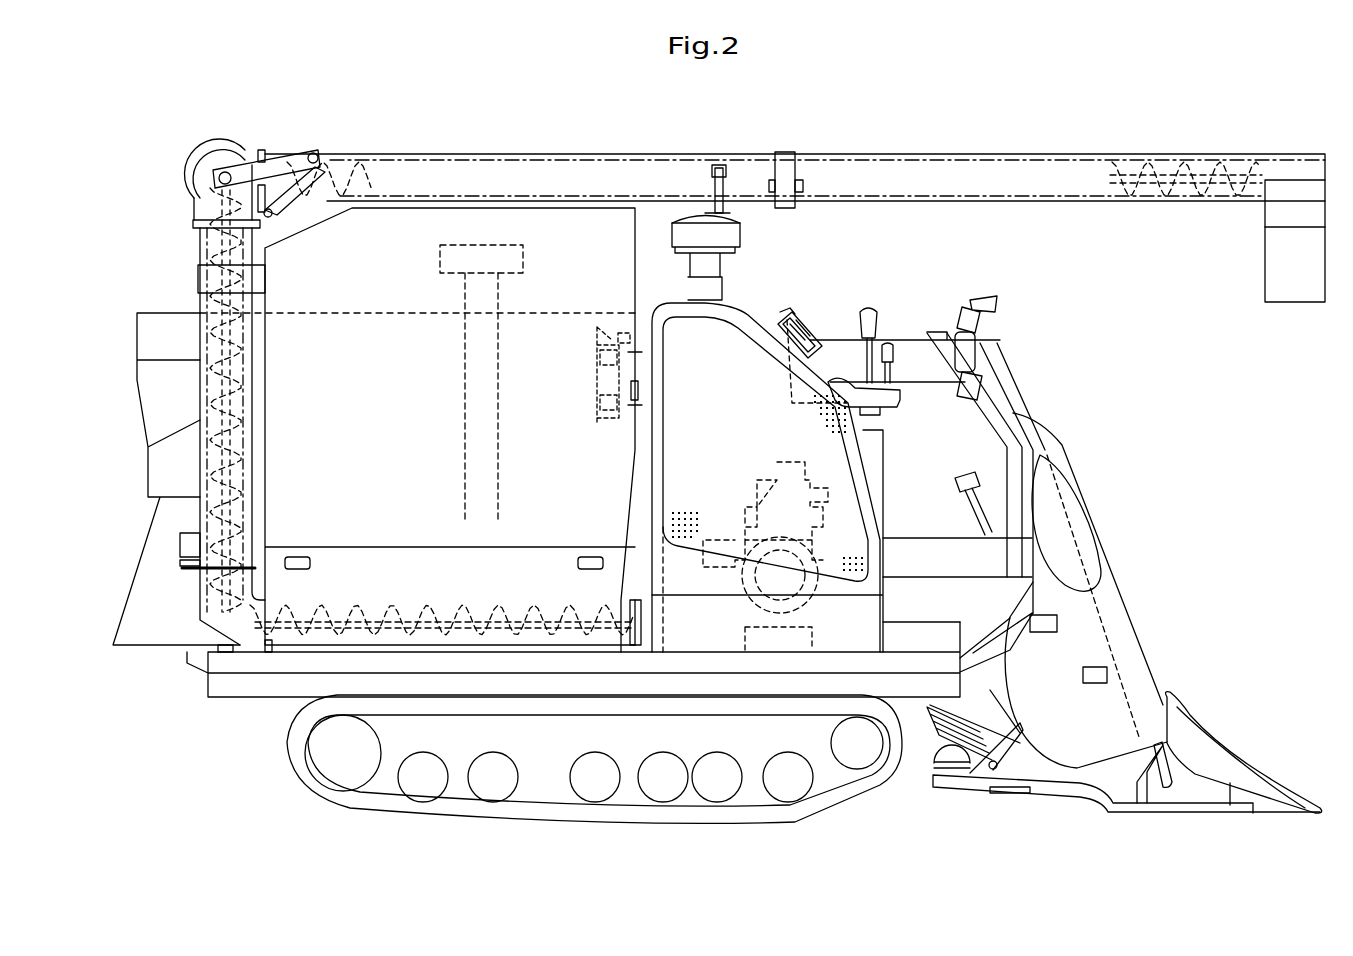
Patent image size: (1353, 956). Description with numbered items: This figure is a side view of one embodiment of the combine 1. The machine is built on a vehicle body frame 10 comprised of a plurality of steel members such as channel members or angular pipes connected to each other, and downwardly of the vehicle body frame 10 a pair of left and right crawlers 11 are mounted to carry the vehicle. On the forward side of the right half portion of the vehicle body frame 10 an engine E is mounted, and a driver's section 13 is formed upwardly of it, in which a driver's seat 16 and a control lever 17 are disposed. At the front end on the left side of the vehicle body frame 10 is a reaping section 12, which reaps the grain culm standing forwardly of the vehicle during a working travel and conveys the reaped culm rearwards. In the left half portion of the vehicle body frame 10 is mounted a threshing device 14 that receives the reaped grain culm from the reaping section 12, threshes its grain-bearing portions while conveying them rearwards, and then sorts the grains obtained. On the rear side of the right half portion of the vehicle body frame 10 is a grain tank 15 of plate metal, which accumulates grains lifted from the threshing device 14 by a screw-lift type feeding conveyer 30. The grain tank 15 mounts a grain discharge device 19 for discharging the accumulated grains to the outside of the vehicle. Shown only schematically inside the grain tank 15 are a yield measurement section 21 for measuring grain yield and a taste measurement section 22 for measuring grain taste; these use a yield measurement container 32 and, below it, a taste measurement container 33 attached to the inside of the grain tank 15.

The combine 1 is at (158, 106).
The vehicle body frame 10 is at (222, 683).
The crawlers 11 is at (538, 815).
The reaping section 12 is at (1167, 575).
The driver's section 13 is at (948, 281).
The threshing device 14 is at (330, 313).
The grain tank 15 is at (583, 203).
The driver's seat 16 is at (792, 320).
The control lever 17 is at (866, 302).
The grain discharge device 19 is at (186, 254).
The yield measurement section 21 is at (627, 318).
The taste measurement section 22 is at (640, 390).
The feeding conveyer 30 is at (516, 302).
The yield measurement container 32 is at (655, 352).
The taste measurement container 33 is at (651, 410).
The engine E is at (748, 572).